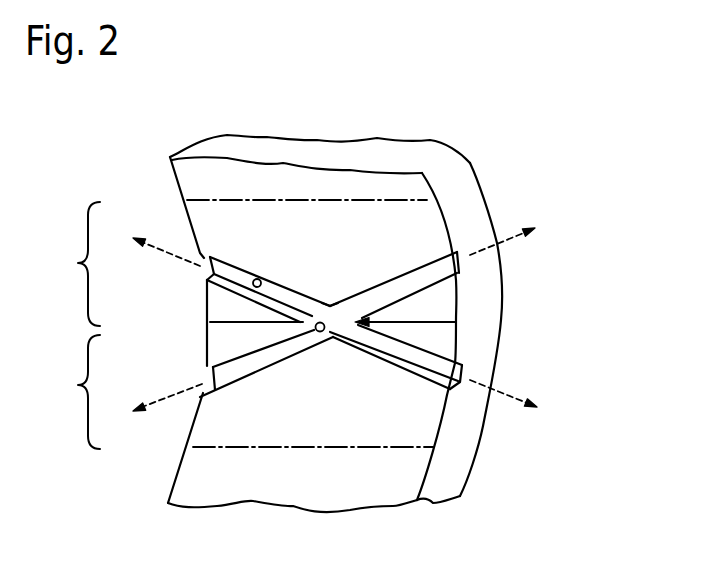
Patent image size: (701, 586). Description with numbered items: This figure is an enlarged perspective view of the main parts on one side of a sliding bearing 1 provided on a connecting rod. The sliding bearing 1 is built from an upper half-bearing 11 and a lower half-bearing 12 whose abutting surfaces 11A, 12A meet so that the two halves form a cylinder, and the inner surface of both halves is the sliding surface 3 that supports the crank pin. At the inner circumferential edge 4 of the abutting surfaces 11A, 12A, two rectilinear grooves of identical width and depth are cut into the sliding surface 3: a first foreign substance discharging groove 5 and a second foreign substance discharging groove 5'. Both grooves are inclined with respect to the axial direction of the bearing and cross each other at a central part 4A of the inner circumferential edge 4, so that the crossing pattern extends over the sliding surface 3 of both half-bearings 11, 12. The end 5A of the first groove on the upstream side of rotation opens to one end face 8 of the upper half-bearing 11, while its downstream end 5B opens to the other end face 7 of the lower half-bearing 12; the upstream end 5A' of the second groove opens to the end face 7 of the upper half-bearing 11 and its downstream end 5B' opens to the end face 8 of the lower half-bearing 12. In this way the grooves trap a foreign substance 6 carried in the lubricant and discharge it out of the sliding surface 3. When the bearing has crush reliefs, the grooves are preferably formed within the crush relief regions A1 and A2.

The sliding bearing 1 is at (580, 248).
The sliding surface 3 is at (400, 399).
The inner circumferential edge 4 is at (210, 323).
The central part 4A is at (336, 305).
The first foreign substance discharging groove 5 is at (334, 303).
The second foreign substance discharging groove 5' is at (329, 333).
The end of the first foreign substance discharging groove 5A is at (170, 269).
The end of the second foreign substance discharging groove 5A' is at (511, 258).
The end of the first foreign substance discharging groove 5B is at (519, 378).
The end of the second foreign substance discharging groove 5B' is at (160, 383).
The foreign substance 6 is at (325, 338).
The end face 7 is at (478, 226).
The end face 8 is at (195, 414).
The upper half-bearing 11 is at (478, 186).
The abutting surface 11A is at (458, 318).
The lower half-bearing 12 is at (462, 458).
The abutting surface 12A is at (470, 312).
The crush relief region A1 is at (74, 264).
The crush relief region A2 is at (74, 392).